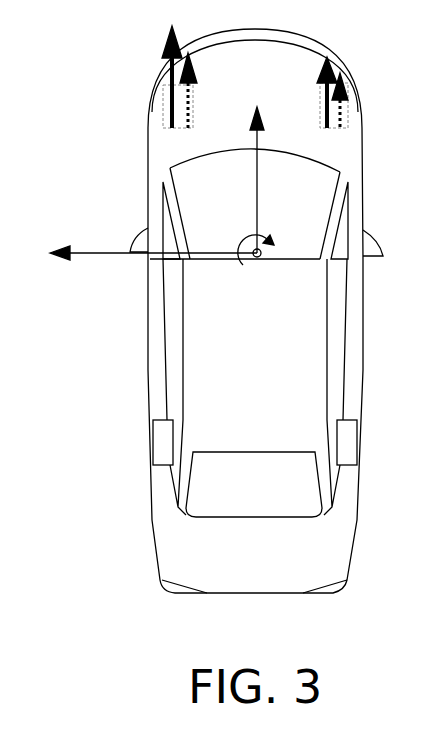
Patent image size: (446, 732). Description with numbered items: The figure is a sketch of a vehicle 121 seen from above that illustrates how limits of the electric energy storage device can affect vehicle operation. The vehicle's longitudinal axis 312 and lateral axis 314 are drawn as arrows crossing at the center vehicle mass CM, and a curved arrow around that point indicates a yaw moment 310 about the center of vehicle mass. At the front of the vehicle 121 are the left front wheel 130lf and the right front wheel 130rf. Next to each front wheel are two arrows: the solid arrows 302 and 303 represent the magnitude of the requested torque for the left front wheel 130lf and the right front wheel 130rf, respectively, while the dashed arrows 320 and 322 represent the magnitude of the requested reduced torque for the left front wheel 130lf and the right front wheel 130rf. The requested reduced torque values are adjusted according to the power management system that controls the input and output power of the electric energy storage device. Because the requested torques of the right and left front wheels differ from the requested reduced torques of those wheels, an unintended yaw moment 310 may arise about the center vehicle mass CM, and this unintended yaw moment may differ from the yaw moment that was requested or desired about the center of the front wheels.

The vehicle 121 is at (354, 596).
The left front wheel 130lf is at (155, 118).
The right front wheel 130rf is at (349, 120).
The solid arrow 302 is at (171, 47).
The solid arrow 303 is at (346, 50).
The dashed arrow 320 is at (187, 108).
The dashed arrow 322 is at (342, 108).
The yaw moment 310 is at (232, 261).
The longitudinal axis 312 is at (240, 179).
The lateral axis 314 is at (82, 268).
The center vehicle mass CM is at (259, 270).